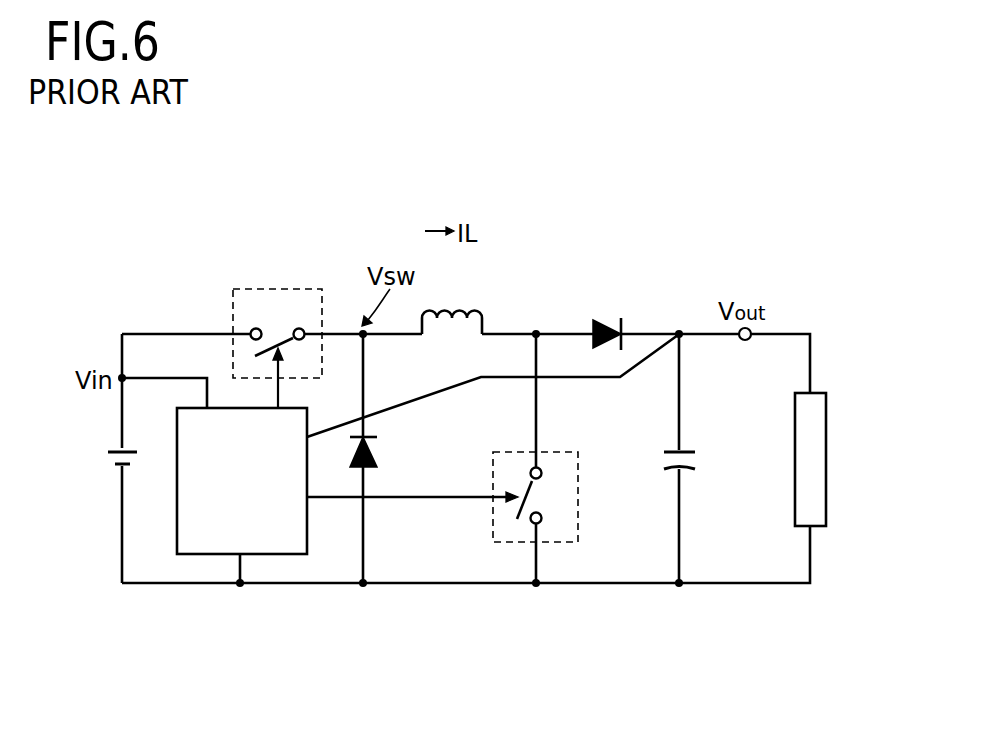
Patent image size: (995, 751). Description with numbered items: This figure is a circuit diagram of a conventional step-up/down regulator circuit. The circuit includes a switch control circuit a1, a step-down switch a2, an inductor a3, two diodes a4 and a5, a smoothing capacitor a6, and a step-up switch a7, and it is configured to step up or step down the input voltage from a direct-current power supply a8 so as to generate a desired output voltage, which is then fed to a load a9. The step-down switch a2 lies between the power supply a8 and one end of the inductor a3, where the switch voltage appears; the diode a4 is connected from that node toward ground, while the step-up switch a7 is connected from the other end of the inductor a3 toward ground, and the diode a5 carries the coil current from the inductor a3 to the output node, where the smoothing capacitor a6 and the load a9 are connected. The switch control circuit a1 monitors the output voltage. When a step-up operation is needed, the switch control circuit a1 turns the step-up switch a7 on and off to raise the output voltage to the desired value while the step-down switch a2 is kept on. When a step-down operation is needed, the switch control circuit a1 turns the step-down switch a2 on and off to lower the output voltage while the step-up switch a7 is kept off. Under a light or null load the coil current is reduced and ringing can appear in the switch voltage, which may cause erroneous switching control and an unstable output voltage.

The switch control circuit a1 is at (177, 436).
The step-down switch a2 is at (281, 289).
The inductor a3 is at (453, 304).
The diode a4 is at (378, 454).
The diode a5 is at (611, 319).
The smoothing capacitor a6 is at (697, 460).
The step-up switch a7 is at (579, 497).
The direct-current power supply a8 is at (107, 460).
The load a9 is at (828, 460).